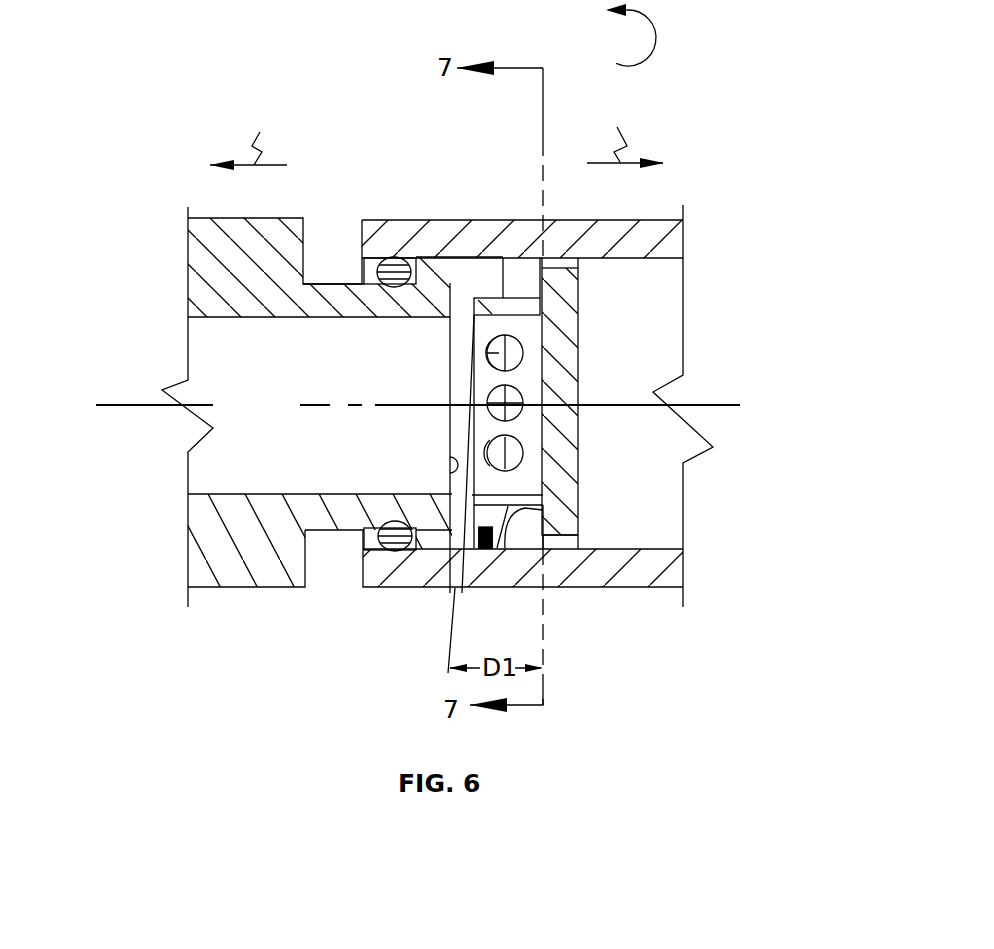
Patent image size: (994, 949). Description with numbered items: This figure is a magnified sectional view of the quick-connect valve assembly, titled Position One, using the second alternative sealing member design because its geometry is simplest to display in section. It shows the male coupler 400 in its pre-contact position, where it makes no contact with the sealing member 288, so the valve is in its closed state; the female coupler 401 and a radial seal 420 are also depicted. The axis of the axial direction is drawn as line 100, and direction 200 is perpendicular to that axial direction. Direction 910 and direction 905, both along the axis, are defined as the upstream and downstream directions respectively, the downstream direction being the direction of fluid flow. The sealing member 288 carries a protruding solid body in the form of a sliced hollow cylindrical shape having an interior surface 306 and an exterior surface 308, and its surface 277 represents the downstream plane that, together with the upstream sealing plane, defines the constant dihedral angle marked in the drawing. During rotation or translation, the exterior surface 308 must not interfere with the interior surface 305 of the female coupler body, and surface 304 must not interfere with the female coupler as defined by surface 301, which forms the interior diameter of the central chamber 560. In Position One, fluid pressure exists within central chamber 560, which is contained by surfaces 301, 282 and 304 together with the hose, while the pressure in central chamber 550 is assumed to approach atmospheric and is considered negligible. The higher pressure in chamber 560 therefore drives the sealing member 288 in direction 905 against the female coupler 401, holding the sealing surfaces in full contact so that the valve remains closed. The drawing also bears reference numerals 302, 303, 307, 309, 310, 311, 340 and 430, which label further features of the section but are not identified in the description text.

The axial axis line 100 is at (422, 406).
The direction 200 is at (543, 386).
The downstream plane surface 277 is at (468, 385).
The chamber surface 282 is at (580, 493).
The sealing member 288 is at (560, 362).
The interior surface of female coupler 301 is at (632, 258).
The roller 302 is at (468, 468).
The bracket 303 is at (503, 292).
The sealing member surface 304 is at (550, 587).
The interior surface of female coupler body 305 is at (522, 283).
The interior surface of SHCS 306 is at (487, 353).
The upper wall 307 is at (300, 318).
The exterior surface of SHCS 308 is at (483, 552).
The lower right block 309 is at (668, 587).
The lower left block 310 is at (247, 590).
The boss 311 is at (323, 530).
The detent 340 is at (448, 470).
The male coupler 400 is at (345, 267).
The female coupler 401 is at (630, 232).
The radial seal 420 is at (378, 268).
The rotation direction 430 is at (624, 35).
The central chamber 550 is at (283, 422).
The central chamber 560 is at (669, 449).
The downstream direction 905 is at (248, 134).
The upstream direction 910 is at (625, 133).